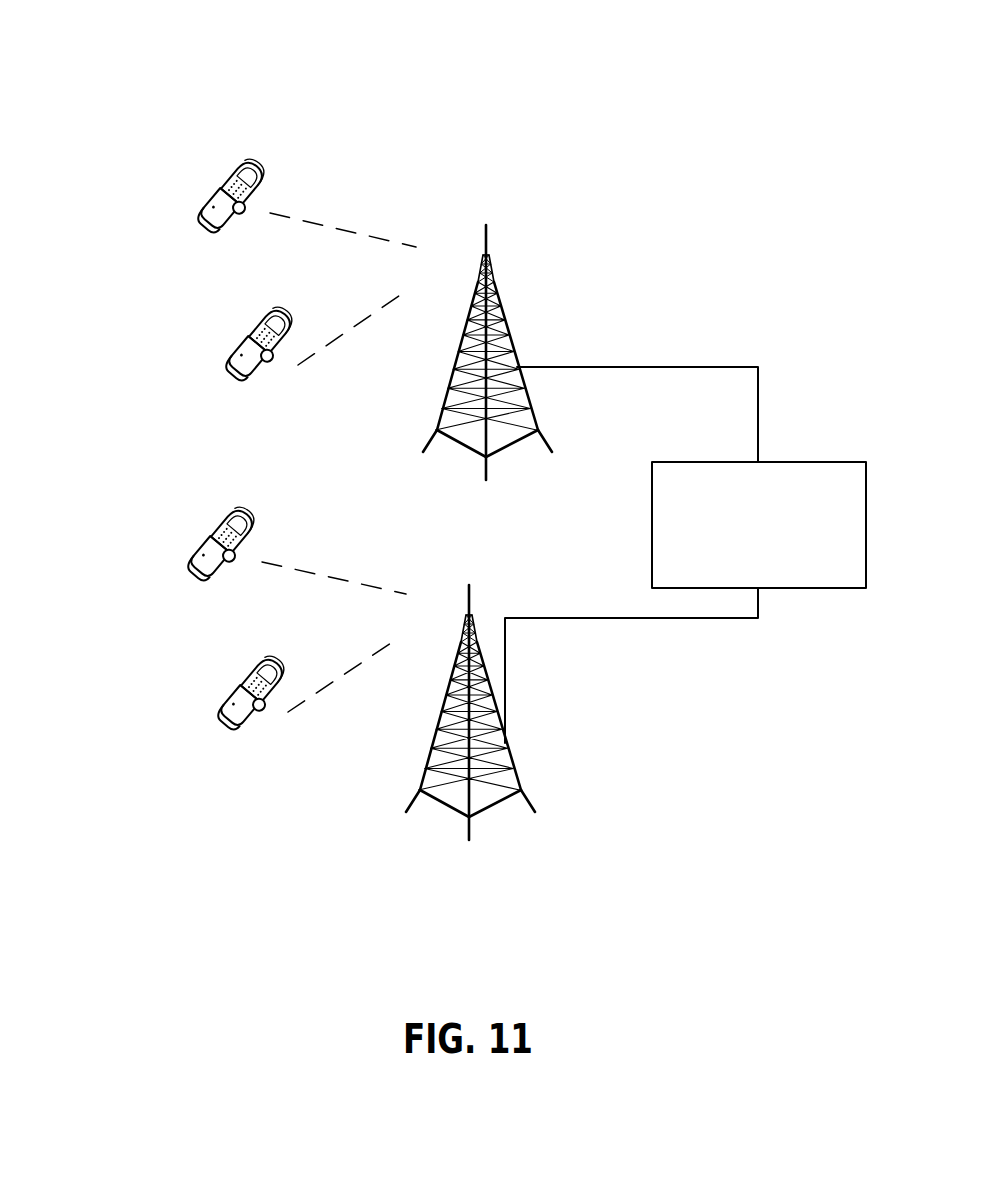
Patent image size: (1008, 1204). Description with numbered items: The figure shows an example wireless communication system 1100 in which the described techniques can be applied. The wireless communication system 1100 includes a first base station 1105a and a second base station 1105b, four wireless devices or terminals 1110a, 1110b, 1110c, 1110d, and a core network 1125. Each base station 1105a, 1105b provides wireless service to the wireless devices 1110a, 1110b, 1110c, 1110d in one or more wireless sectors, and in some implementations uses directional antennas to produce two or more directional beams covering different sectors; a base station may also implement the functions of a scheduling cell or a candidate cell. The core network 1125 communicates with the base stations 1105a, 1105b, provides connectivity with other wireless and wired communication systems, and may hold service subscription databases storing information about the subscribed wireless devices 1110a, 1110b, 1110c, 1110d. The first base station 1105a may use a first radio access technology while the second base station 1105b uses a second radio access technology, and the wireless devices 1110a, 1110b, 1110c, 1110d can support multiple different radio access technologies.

The wireless communication system 1100 is at (626, 64).
The first base station 1105a is at (500, 300).
The second base station 1105b is at (483, 617).
The wireless device 1110a is at (226, 166).
The wireless device 1110b is at (252, 316).
The wireless device 1110c is at (168, 533).
The wireless device 1110d is at (246, 661).
The core network 1125 is at (672, 460).